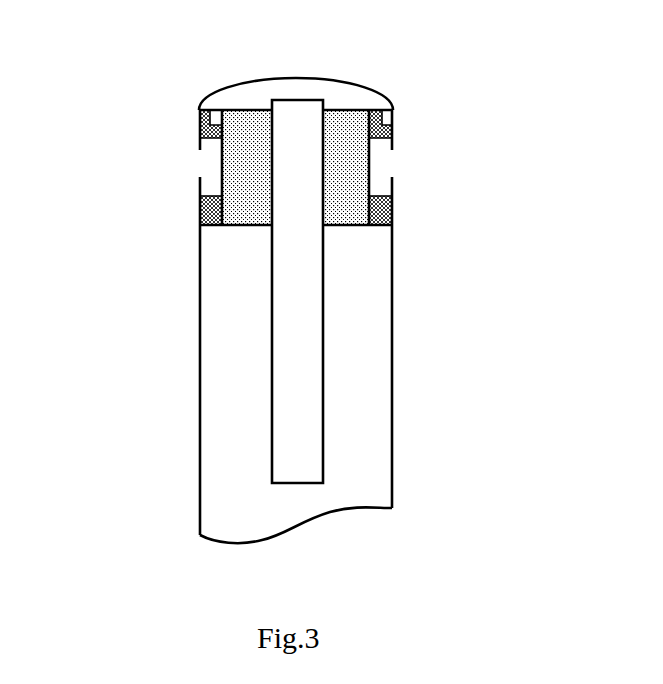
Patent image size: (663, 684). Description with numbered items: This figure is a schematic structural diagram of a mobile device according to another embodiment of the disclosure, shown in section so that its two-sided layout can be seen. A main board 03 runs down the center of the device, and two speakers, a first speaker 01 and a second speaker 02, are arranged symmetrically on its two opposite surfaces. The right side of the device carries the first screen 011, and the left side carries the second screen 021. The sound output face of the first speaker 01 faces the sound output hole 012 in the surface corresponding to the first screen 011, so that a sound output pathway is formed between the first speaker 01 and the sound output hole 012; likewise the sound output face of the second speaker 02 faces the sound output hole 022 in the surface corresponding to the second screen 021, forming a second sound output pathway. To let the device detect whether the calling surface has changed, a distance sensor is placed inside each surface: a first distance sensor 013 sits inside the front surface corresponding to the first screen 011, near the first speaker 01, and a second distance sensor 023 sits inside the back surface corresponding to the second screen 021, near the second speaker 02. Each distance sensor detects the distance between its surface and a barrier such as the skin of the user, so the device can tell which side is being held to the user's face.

The first speaker 01 is at (347, 131).
The second speaker 02 is at (242, 131).
The main board 03 is at (284, 315).
The first screen 011 is at (393, 248).
The sound output hole 012 is at (389, 163).
The first distance sensor 013 is at (392, 118).
The second screen 021 is at (199, 265).
The sound output hole 022 is at (204, 163).
The second distance sensor 023 is at (200, 118).